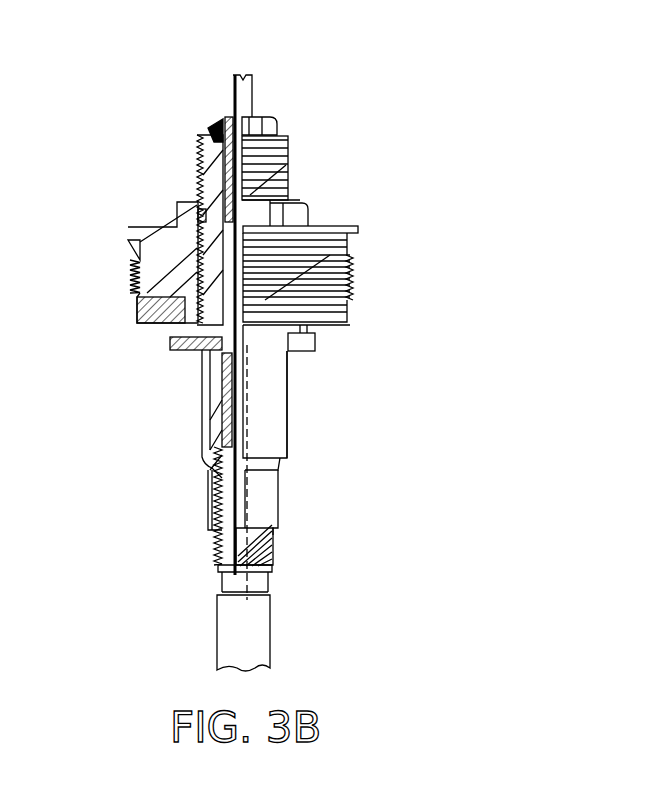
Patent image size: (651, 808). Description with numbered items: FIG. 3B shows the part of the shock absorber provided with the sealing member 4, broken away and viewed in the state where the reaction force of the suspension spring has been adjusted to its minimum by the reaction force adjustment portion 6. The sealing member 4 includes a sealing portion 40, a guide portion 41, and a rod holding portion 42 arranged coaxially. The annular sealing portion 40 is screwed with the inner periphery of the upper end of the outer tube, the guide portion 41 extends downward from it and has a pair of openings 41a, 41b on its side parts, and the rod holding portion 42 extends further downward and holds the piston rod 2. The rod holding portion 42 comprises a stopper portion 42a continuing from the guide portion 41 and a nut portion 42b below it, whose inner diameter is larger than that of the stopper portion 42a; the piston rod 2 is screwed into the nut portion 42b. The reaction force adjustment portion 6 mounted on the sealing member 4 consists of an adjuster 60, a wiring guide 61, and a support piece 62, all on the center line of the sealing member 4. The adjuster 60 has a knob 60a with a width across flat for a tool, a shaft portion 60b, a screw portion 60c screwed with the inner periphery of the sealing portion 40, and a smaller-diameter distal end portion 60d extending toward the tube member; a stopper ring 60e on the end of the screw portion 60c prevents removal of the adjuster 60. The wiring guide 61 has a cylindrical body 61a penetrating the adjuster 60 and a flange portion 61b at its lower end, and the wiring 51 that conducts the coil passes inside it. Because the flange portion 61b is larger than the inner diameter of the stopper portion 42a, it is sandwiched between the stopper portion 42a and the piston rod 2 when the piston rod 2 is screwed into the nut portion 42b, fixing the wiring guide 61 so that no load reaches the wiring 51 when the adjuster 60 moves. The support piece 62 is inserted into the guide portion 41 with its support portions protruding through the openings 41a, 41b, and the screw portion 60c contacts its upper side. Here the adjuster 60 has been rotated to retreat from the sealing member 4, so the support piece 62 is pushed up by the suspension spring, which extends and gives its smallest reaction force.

The piston rod 2 is at (272, 648).
The sealing member 4 is at (366, 222).
The reaction force adjustment portion 6 is at (280, 100).
The sealing portion 40 is at (353, 275).
The guide portion 41 is at (290, 410).
The opening 41a is at (202, 378).
The opening 41b is at (288, 372).
The rod holding portion 42 is at (283, 505).
The stopper portion 42a is at (200, 437).
The nut portion 42b is at (217, 507).
The wiring 51 is at (243, 76).
The adjuster 60 is at (198, 160).
The knob 60a is at (278, 128).
The shaft portion 60b is at (197, 186).
The screw portion 60c is at (195, 255).
The distal end portion 60d is at (195, 360).
The stopper ring 60e is at (197, 328).
The wiring guide 61 is at (213, 124).
The cylindrical body 61a is at (288, 165).
The flange portion 61b is at (210, 450).
The support piece 62 is at (316, 343).